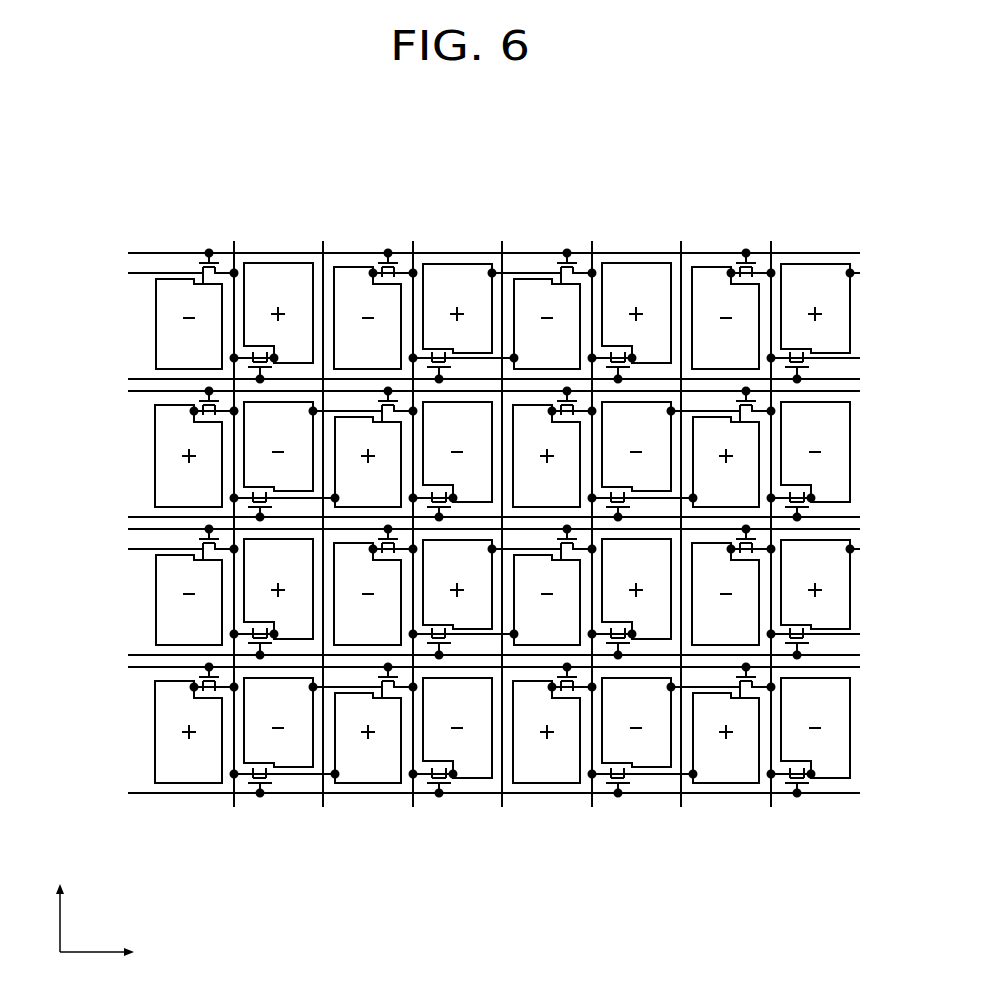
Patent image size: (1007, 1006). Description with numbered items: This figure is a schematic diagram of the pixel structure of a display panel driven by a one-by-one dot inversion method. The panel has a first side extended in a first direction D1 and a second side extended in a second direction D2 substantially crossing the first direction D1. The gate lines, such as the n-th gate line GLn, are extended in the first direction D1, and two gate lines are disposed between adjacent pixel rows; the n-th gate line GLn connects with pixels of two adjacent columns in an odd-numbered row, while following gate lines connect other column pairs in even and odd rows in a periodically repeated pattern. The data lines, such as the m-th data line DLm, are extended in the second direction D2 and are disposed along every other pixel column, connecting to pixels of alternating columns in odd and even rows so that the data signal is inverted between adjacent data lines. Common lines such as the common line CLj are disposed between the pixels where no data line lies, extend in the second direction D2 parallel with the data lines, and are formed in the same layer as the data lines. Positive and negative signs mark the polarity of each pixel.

The m-th data line DLm is at (234, 509).
The common line CLj is at (321, 509).
The n-th gate line GLn is at (129, 379).
The first direction D1 is at (111, 950).
The second direction D2 is at (60, 901).